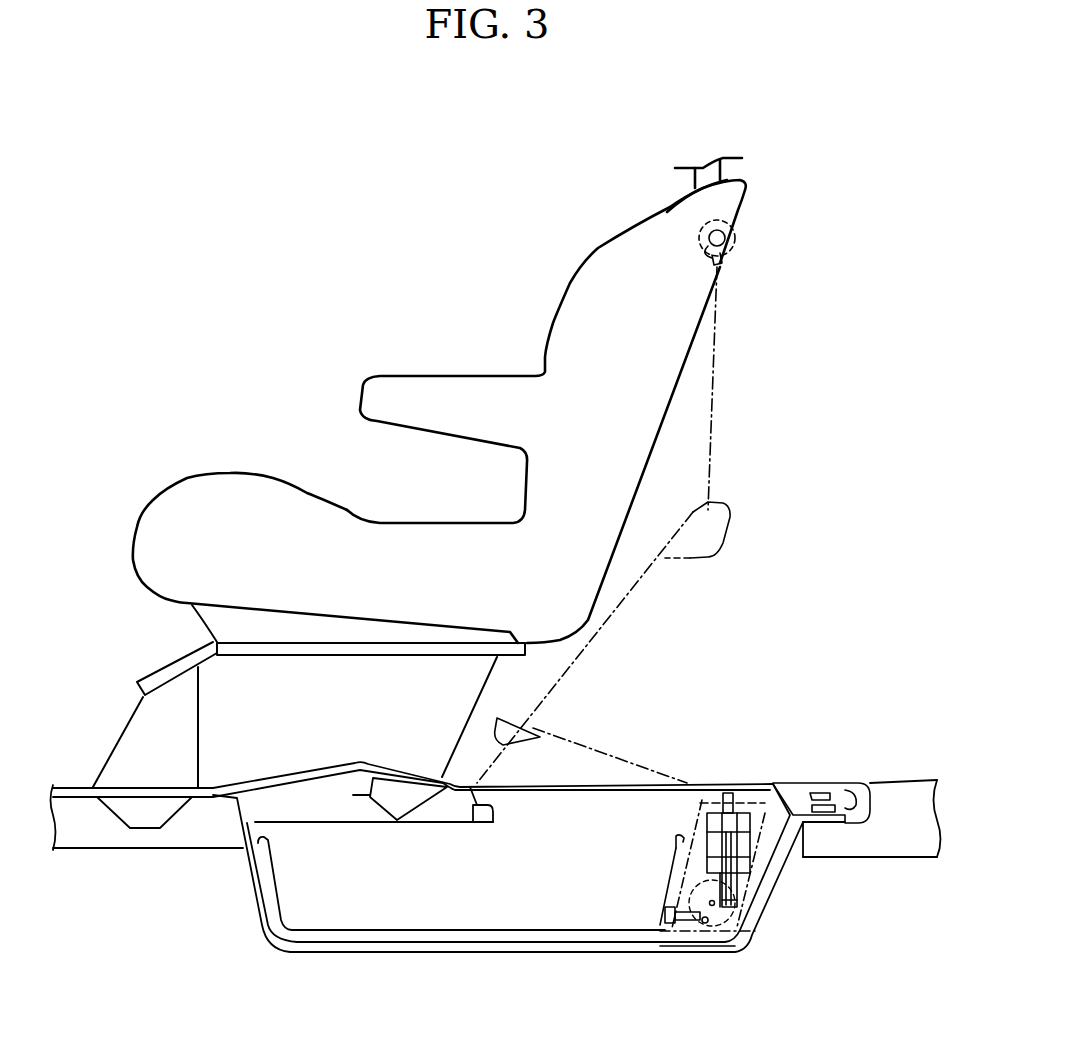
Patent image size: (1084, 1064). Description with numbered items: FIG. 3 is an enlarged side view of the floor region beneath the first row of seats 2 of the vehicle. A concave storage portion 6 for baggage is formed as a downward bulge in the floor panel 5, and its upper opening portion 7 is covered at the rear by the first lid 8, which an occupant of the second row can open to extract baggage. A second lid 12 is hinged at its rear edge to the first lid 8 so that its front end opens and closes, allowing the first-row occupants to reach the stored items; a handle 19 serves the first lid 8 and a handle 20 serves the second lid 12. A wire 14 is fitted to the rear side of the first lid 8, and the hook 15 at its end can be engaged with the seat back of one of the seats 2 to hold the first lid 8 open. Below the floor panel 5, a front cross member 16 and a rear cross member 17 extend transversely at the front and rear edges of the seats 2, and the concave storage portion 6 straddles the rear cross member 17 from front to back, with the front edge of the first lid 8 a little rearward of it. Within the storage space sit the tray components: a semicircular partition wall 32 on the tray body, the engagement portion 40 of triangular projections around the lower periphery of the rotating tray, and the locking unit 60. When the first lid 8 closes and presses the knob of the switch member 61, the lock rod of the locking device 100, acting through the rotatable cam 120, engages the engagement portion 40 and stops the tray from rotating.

The first row of seats 2 is at (597, 243).
The floor panel 5 is at (143, 800).
The concave storage portion 6 is at (620, 877).
The upper opening portion 7 is at (687, 800).
The first lid 8 is at (607, 623).
The second lid 12 is at (617, 757).
The wire 14 is at (715, 370).
The hook 15 is at (745, 200).
The front cross member 16 is at (178, 817).
The rear cross member 17 is at (377, 822).
The handle 19 is at (813, 783).
The handle 20 is at (543, 713).
The partition wall 32 is at (300, 823).
The engagement portion 40 is at (668, 935).
The locking unit 60 is at (683, 823).
The switch member 61 is at (757, 815).
The locking device 100 is at (705, 940).
The cam 120 is at (763, 927).